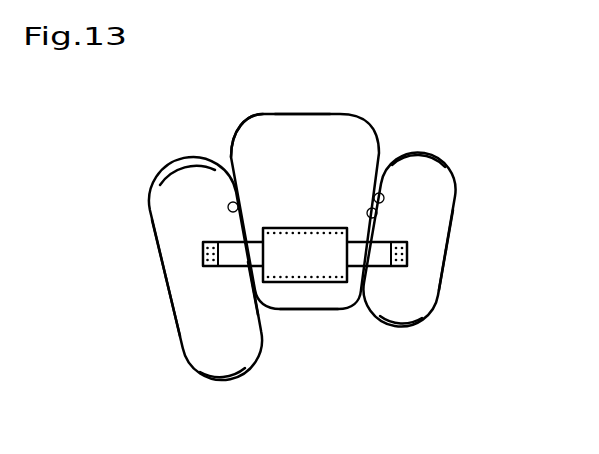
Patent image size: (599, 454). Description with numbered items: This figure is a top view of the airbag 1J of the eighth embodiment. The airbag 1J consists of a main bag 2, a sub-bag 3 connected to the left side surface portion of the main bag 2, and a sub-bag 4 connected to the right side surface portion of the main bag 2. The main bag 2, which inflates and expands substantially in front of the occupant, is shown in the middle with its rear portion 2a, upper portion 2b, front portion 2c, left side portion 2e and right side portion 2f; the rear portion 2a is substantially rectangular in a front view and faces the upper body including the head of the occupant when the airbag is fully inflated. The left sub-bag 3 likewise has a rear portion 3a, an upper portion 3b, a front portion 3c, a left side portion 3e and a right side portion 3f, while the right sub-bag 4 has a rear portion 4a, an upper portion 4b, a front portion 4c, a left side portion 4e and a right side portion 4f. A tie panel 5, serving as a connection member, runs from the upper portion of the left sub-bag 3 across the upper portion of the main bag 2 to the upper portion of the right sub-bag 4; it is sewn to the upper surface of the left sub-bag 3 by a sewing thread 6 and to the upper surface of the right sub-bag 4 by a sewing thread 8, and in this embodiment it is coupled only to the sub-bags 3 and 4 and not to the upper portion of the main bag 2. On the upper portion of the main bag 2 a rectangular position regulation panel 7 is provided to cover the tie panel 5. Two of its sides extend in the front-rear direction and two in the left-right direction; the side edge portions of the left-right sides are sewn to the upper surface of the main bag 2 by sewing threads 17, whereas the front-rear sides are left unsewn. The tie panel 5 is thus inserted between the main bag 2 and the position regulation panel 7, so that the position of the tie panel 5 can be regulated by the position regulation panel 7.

The airbag 1J is at (502, 174).
The main bag 2 is at (316, 106).
The rear portion 2a is at (305, 312).
The upper portion 2b is at (297, 176).
The front portion 2c is at (285, 112).
The left side portion 2e is at (238, 206).
The right side portion 2f is at (378, 197).
The sub-bag 3 is at (162, 345).
The rear portion 3a is at (222, 382).
The upper portion 3b is at (185, 288).
The front portion 3c is at (181, 158).
The left side portion 3e is at (157, 250).
The right side portion 3f is at (252, 278).
The sub-bag 4 is at (445, 306).
The rear portion 4a is at (394, 327).
The upper portion 4b is at (428, 276).
The front portion 4c is at (424, 153).
The left side portion 4e is at (374, 215).
The right side portion 4f is at (450, 234).
The tie panel 5 is at (377, 257).
The sewing thread 6 is at (203, 250).
The position regulation panel 7 is at (330, 245).
The sewing thread 8 is at (408, 252).
The sewing threads 17 is at (293, 228).